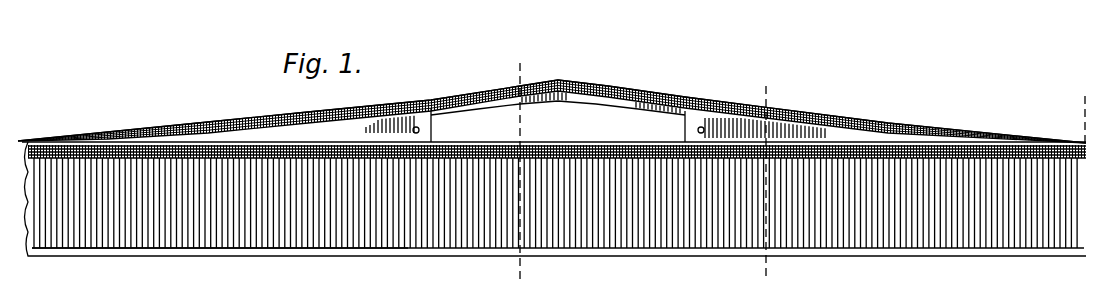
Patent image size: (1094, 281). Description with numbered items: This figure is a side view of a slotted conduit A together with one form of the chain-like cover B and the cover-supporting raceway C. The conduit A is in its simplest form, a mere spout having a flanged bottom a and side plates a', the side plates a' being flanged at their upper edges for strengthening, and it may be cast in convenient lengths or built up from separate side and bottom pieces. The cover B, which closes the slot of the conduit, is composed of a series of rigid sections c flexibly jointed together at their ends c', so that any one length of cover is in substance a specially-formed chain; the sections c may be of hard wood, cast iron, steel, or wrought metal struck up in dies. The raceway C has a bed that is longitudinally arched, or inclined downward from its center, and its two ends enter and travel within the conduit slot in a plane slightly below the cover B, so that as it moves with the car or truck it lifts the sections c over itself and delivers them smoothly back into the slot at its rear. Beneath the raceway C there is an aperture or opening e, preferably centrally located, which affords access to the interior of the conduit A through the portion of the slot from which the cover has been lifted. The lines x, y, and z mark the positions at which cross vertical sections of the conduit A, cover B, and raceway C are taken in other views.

The conduit A is at (554, 199).
The side plates a' is at (220, 216).
The cover B is at (552, 111).
The cover-supporting raceway C is at (381, 128).
The flanged bottom a is at (758, 108).
The rigid sections c is at (552, 109).
The jointed ends c' is at (562, 90).
The aperture e is at (558, 121).
The section line x is at (519, 162).
The section line y is at (762, 172).
The section line z is at (1081, 108).